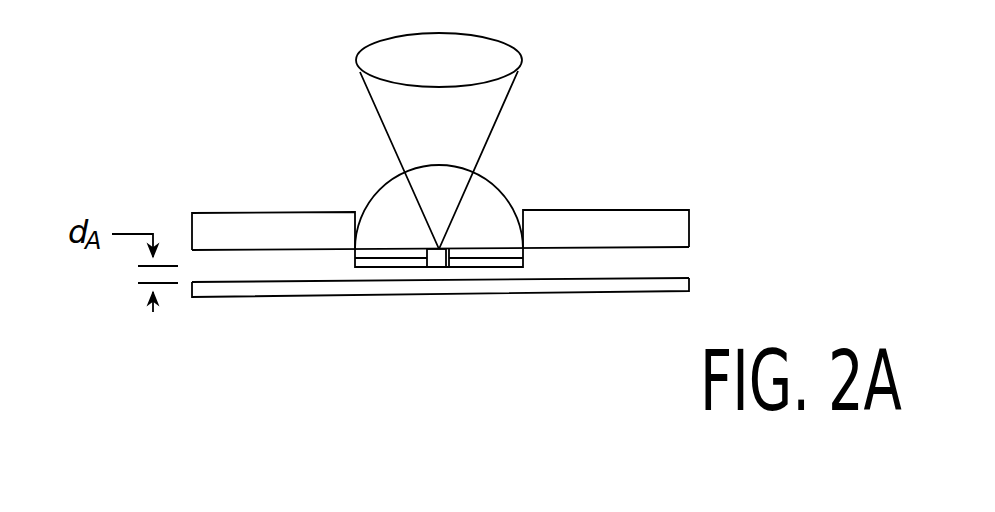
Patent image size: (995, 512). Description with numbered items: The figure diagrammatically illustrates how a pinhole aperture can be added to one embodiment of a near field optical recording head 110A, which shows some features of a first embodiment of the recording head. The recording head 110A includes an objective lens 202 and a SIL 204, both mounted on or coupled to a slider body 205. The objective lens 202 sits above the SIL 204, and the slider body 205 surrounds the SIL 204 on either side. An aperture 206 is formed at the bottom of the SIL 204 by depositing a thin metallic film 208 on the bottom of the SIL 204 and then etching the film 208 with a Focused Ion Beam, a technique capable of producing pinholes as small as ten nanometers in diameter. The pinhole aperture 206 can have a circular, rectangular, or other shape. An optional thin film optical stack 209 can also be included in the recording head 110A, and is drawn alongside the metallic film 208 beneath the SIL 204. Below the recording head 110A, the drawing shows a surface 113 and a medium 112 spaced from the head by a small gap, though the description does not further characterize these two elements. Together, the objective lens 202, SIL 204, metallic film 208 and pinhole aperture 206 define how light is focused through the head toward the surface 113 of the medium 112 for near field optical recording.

The objective lens 202 is at (478, 52).
The SIL 204 is at (476, 198).
The near field optical recording head 110A is at (684, 182).
The slider body 205 is at (672, 222).
The thin metallic film 208 is at (383, 263).
The thin film optical stack 209 is at (360, 258).
The aperture 206 is at (438, 270).
The top surface layer of substrate 113 is at (658, 277).
The substrate / circuit board 112 is at (690, 287).